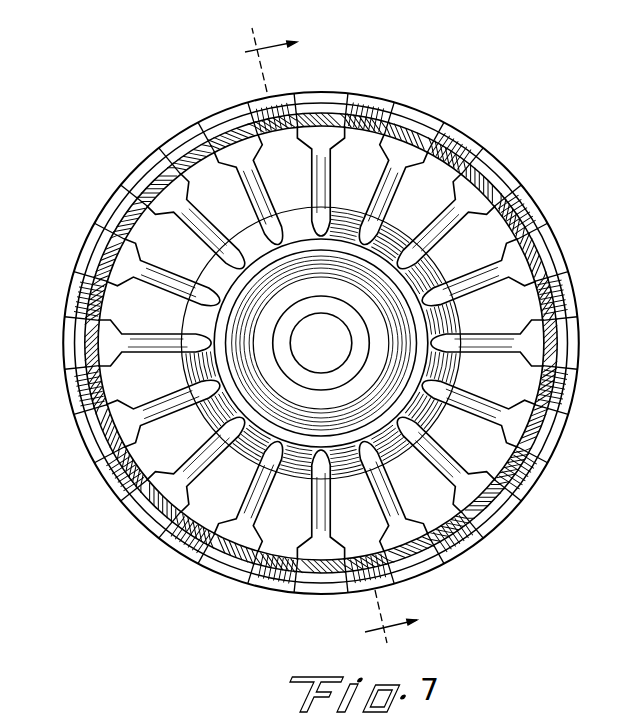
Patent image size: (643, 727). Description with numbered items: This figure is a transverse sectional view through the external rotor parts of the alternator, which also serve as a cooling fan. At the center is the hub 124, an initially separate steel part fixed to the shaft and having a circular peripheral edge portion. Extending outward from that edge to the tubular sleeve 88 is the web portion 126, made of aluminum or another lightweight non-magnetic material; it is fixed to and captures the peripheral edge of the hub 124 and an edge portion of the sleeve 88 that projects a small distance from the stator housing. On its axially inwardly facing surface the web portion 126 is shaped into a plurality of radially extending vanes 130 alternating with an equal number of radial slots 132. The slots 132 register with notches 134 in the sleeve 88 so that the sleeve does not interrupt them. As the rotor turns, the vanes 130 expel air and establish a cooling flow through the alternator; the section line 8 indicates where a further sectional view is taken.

The section line 8- 8 is at (331, 339).
The tubular sleeve 88 is at (311, 113).
The hub 124 is at (337, 410).
The web portion 126 is at (467, 243).
The vanes 130 is at (323, 190).
The radial slots 132 is at (363, 105).
The notches 134 is at (191, 157).